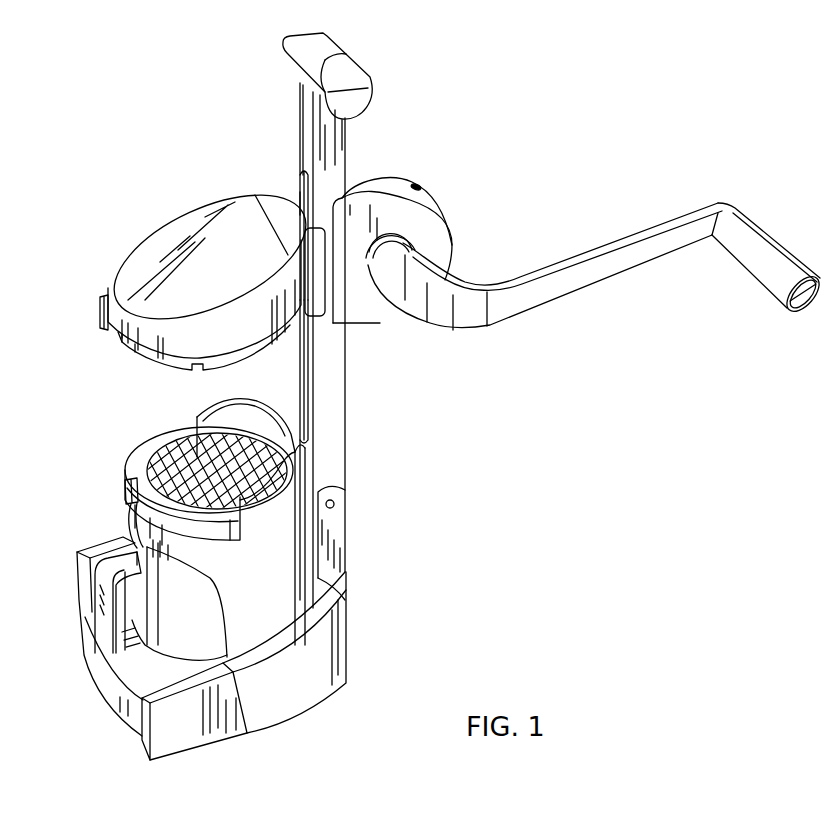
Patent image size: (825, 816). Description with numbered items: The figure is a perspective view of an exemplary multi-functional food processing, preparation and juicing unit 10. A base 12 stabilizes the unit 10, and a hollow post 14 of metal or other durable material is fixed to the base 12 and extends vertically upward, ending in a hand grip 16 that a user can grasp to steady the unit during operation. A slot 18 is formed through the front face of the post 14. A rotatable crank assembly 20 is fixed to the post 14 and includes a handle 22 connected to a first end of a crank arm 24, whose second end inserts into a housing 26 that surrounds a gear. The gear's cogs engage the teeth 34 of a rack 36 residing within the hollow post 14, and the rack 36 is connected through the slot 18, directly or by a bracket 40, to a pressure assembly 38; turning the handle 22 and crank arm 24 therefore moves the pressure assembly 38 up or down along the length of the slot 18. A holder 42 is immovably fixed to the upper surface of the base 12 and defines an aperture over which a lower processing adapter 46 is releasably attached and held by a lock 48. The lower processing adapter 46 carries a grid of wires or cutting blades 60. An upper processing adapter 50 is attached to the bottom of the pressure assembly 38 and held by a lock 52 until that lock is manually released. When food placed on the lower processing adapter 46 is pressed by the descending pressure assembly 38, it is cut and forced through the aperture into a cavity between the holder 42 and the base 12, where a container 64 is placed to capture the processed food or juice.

The multi-functional unit 10 is at (60, 132).
The base 12 is at (292, 688).
The post 14 is at (333, 463).
The hand grip 16 is at (323, 47).
The slot 18 is at (300, 202).
The crank assembly 20 is at (484, 200).
The handle 22 is at (750, 263).
The crank arm 24 is at (524, 303).
The housing 26 is at (385, 176).
The teeth 34 is at (302, 192).
The rack 36 is at (298, 372).
The pressure assembly 38 is at (120, 243).
The bracket 40 is at (320, 272).
The holder 42 is at (95, 466).
The lower processing adapter 46 is at (173, 432).
The lock 48 is at (124, 495).
The upper processing adapter 50 is at (128, 342).
The lock 52 is at (100, 310).
The cutting blades 60 is at (160, 455).
The container 64 is at (163, 633).